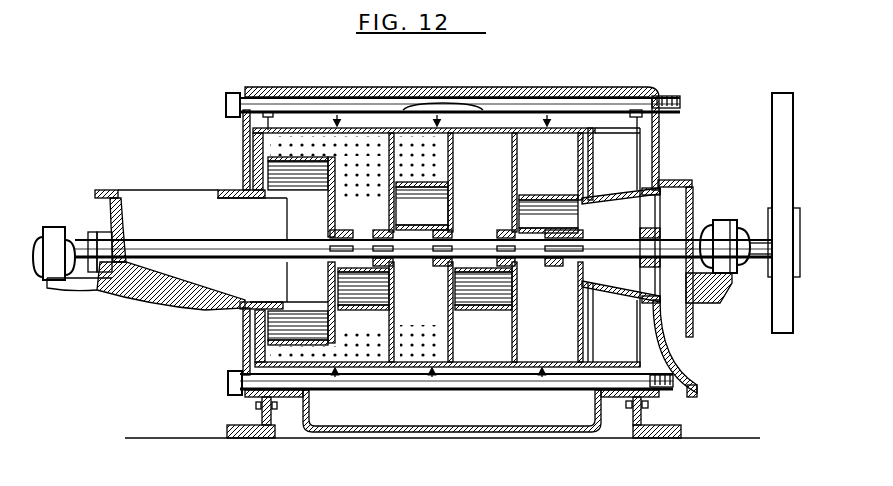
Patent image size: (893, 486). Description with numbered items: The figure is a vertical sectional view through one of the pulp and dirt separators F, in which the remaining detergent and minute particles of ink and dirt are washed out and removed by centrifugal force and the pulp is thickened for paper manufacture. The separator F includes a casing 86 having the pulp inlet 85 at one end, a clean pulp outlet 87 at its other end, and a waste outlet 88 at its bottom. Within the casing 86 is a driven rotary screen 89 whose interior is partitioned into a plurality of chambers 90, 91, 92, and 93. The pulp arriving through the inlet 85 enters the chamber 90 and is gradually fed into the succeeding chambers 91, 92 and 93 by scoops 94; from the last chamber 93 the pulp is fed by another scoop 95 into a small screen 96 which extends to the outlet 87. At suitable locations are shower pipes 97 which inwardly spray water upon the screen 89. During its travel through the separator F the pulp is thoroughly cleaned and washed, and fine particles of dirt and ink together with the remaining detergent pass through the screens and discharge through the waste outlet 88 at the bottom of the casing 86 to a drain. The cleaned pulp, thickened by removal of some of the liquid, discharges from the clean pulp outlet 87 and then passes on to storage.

The pulp inlet 85 is at (170, 191).
The casing 86 is at (558, 88).
The clean pulp outlet 87 is at (687, 182).
The waste outlet 88 is at (572, 413).
The driven rotary screen 89 is at (487, 130).
The chamber 90 is at (336, 214).
The chamber 91 is at (418, 182).
The chamber 92 is at (482, 182).
The chamber 93 is at (556, 180).
The scoops 94 is at (352, 288).
The scoop 95 is at (535, 224).
The small screen 96 is at (618, 198).
The shower pipes 97 is at (376, 112).
The pulp and dirt separator F is at (660, 45).